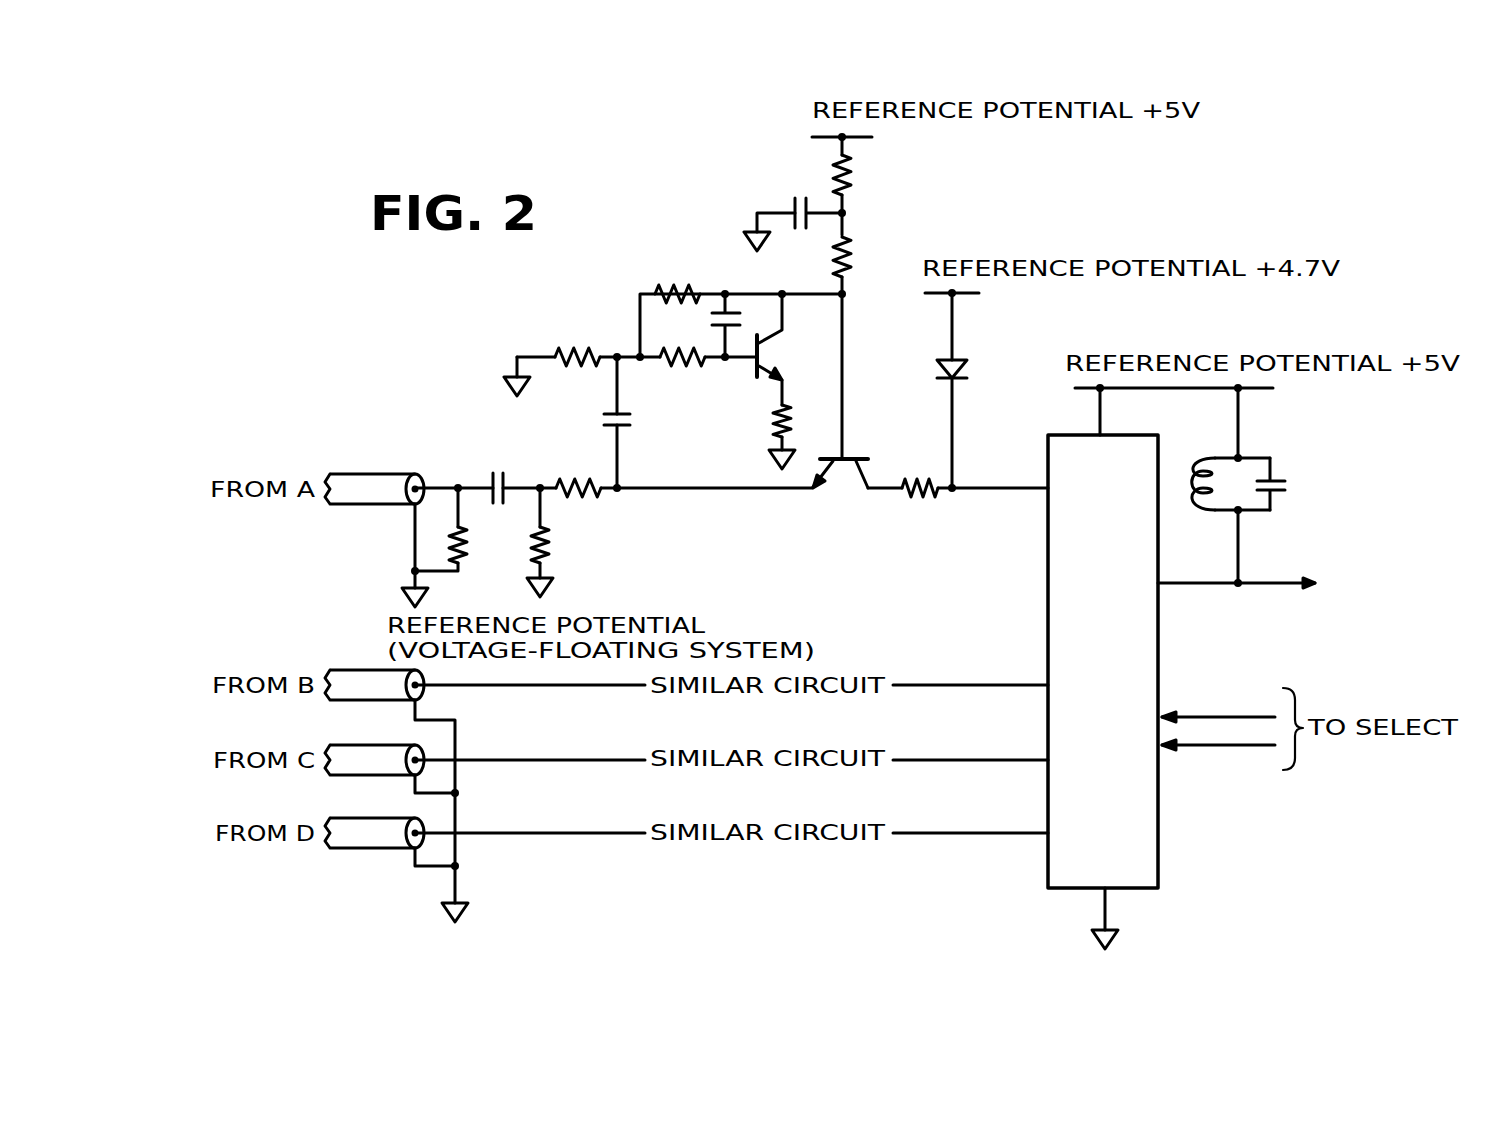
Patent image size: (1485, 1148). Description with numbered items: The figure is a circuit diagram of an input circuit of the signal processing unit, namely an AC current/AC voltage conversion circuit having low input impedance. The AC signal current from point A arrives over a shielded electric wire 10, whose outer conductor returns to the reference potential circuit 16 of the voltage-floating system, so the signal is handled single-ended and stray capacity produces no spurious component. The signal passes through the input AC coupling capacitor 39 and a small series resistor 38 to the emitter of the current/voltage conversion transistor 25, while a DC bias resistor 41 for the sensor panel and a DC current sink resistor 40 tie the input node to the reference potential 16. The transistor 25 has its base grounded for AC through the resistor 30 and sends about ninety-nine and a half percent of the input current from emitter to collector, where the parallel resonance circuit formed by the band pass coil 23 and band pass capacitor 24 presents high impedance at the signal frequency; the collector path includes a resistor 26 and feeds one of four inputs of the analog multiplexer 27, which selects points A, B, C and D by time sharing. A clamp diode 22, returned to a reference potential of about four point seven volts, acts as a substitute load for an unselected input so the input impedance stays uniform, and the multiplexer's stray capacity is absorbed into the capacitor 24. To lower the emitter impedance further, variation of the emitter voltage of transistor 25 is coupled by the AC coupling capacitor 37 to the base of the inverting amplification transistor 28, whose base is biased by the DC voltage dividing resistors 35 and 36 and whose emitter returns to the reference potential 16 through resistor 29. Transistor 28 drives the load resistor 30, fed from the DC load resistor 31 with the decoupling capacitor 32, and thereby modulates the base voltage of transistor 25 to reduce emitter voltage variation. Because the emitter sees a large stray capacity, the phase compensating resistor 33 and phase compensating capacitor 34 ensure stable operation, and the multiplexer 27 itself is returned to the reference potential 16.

The shielded electric wire 10 is at (369, 474).
The reference potential circuit in the voltage-floating system 16 is at (408, 604).
The clamp diode 22 is at (962, 356).
The band pass coil 23 is at (1192, 464).
The band pass capacitor 24 is at (1278, 486).
The current/voltage conversion transistor 25 is at (858, 456).
The resistor 26 is at (925, 496).
The analog multiplexer 27 is at (1158, 660).
The inversive amplification transistor for voltage modulation 28 is at (771, 334).
The resistor 29 is at (778, 415).
The AC and DC load resistor for transistor 28 and base grounding resistor for transi 30 is at (848, 258).
The DC load resistor 31 is at (848, 172).
The decoupling capacitor 32 is at (800, 198).
The phase compensating resistor 33 is at (680, 360).
The phase compensating capacitor 34 is at (712, 314).
The DC voltage dividing resistor 35 is at (672, 290).
The DC voltage dividing resistor 36 is at (576, 345).
The AC coupling capacitor 37 is at (605, 419).
The resistor 38 is at (594, 497).
The AC coupling capacitor 39 is at (497, 472).
The DC current sink resistor 40 is at (544, 535).
The DC bias resistor for sensor panel 41 is at (458, 530).